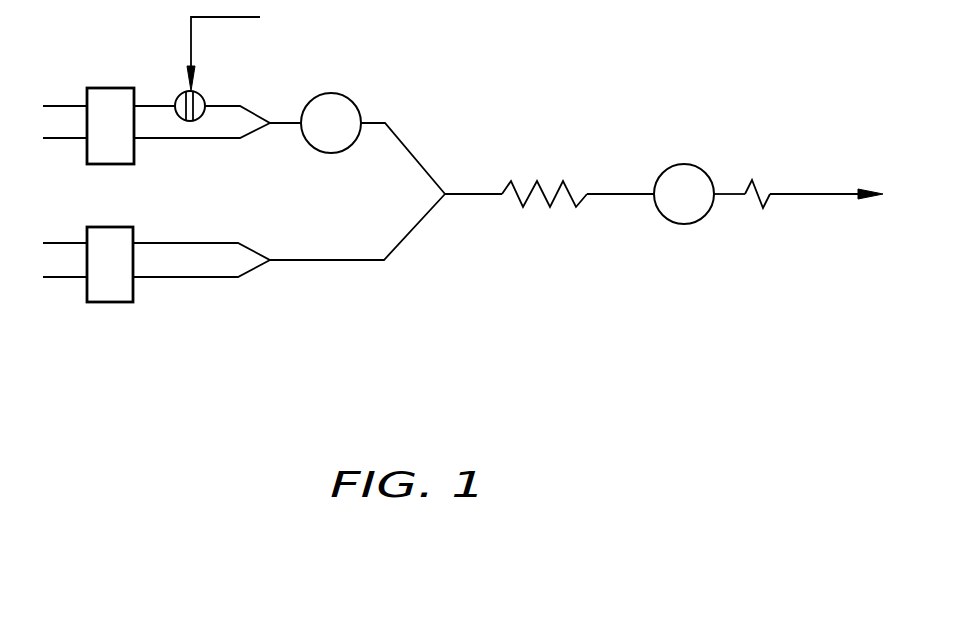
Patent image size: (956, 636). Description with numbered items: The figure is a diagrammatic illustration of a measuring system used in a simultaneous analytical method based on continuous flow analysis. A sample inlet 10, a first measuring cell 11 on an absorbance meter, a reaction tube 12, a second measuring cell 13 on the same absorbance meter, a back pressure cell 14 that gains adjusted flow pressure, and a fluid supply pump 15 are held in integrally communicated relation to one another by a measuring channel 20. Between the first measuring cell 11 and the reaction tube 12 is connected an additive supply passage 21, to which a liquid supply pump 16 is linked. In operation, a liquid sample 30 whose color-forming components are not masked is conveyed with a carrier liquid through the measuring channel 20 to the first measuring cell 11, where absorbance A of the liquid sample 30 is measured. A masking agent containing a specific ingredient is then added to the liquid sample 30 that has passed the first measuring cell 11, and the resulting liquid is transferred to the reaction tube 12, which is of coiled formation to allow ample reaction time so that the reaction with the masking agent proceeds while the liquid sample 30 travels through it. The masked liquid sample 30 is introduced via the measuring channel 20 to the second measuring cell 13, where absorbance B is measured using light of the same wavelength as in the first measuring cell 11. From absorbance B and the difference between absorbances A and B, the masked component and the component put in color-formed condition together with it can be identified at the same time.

The sample inlet 10 is at (197, 94).
The first measuring cell 11 is at (330, 93).
The reaction tube 12 is at (540, 194).
The second measuring cell 13 is at (683, 165).
The back pressure cell 14 is at (757, 197).
The fluid supply pump 15 is at (113, 88).
The liquid supply pump 16 is at (107, 302).
The measuring channel 20 is at (415, 157).
The additive supply passage 21 is at (316, 262).
The liquid sample 30 is at (235, 47).